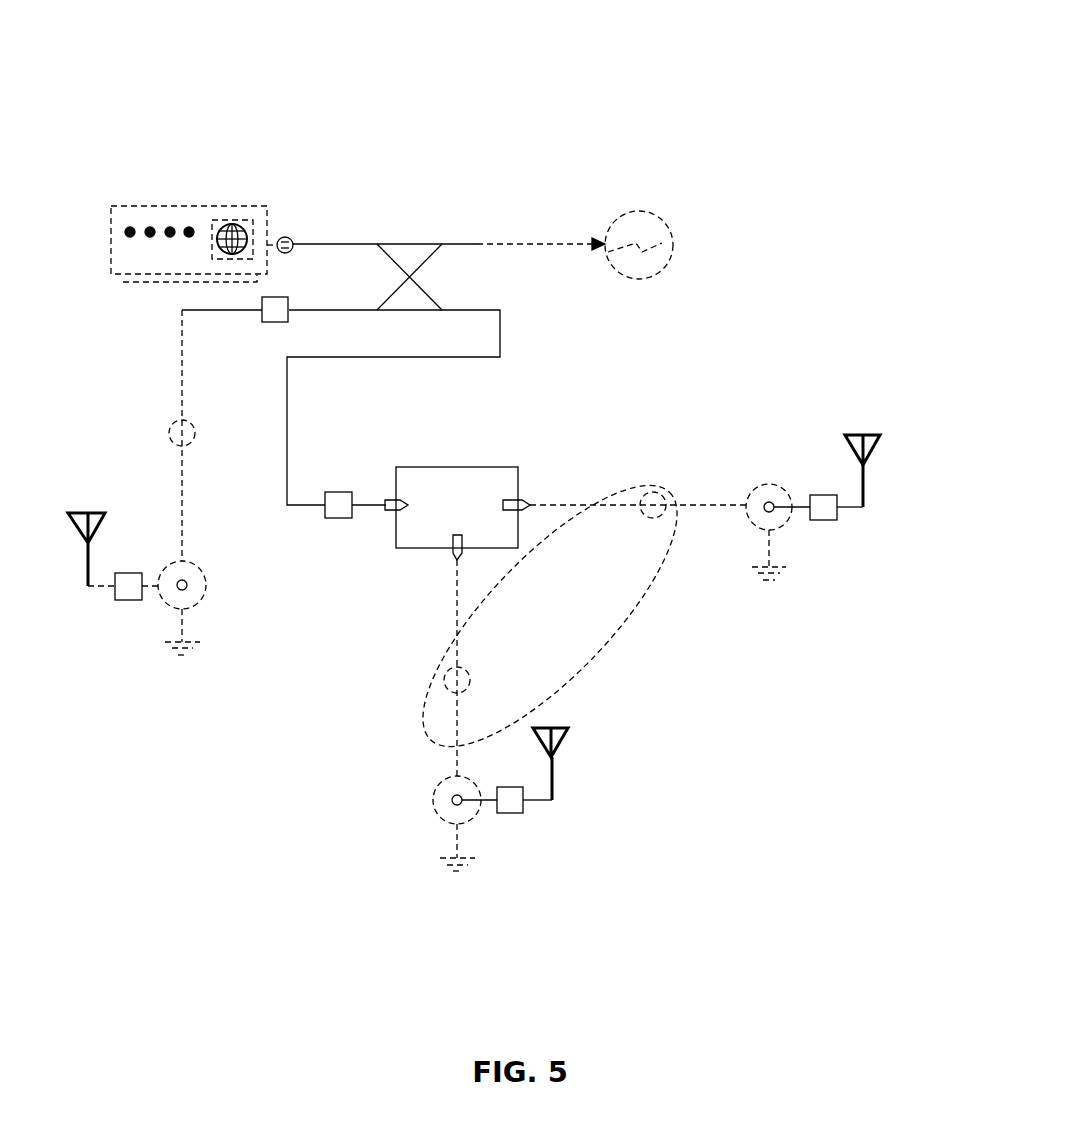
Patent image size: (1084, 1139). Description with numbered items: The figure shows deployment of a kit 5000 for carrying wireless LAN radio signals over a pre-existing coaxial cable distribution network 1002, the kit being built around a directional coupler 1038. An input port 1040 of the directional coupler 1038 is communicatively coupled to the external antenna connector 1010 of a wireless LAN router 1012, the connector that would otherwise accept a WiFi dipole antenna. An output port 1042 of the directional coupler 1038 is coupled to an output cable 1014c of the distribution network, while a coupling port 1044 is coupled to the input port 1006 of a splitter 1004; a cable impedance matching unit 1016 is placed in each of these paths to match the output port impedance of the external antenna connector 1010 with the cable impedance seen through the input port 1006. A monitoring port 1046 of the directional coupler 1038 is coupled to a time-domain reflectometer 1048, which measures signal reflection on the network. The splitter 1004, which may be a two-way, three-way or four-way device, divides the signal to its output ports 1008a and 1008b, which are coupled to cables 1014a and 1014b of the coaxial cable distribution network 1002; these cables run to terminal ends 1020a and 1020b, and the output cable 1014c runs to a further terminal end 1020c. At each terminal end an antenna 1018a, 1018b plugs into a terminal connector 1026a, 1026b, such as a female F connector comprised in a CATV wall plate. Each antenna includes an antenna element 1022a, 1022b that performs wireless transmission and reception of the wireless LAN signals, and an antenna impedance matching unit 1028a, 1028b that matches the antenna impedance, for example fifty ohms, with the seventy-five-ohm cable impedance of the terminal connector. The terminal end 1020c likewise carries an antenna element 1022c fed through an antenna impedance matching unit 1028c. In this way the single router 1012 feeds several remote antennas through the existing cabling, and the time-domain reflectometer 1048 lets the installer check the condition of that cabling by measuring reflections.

The kit 5000 is at (388, 92).
The wireless LAN router 1012 is at (181, 206).
The external antenna connector 1010 is at (268, 196).
The input port 1040 is at (385, 194).
The output port 1042 is at (364, 238).
The directional coupler 1038 is at (434, 229).
The monitoring port 1046 is at (541, 220).
The coupling port 1044 is at (429, 380).
The time-domain reflectometer 1048 is at (688, 236).
The cable impedance matching unit 1016 is at (284, 449).
The cable 1014c is at (143, 435).
The antenna element 1022c is at (100, 501).
The antenna impedance matching unit 1028c is at (147, 529).
The terminal end 1020c is at (149, 618).
The splitter 1004 is at (452, 462).
The input port 1006 is at (363, 461).
The output port 1008b is at (543, 459).
The output port 1008a is at (391, 568).
The cable 1014b is at (638, 458).
The cable 1014a is at (395, 668).
The pre-existing coaxial cable distribution network 1002 is at (498, 616).
The terminal end 1020b is at (733, 532).
The terminal connector 1026b is at (766, 455).
The antenna impedance matching unit 1028b is at (863, 546).
The antenna 1018b is at (893, 497).
The antenna element 1022b is at (894, 417).
The terminal end 1020a is at (418, 806).
The terminal connector 1026a is at (416, 843).
The antenna impedance matching unit 1028a is at (550, 838).
The antenna 1018a is at (595, 798).
The antenna element 1022a is at (596, 726).